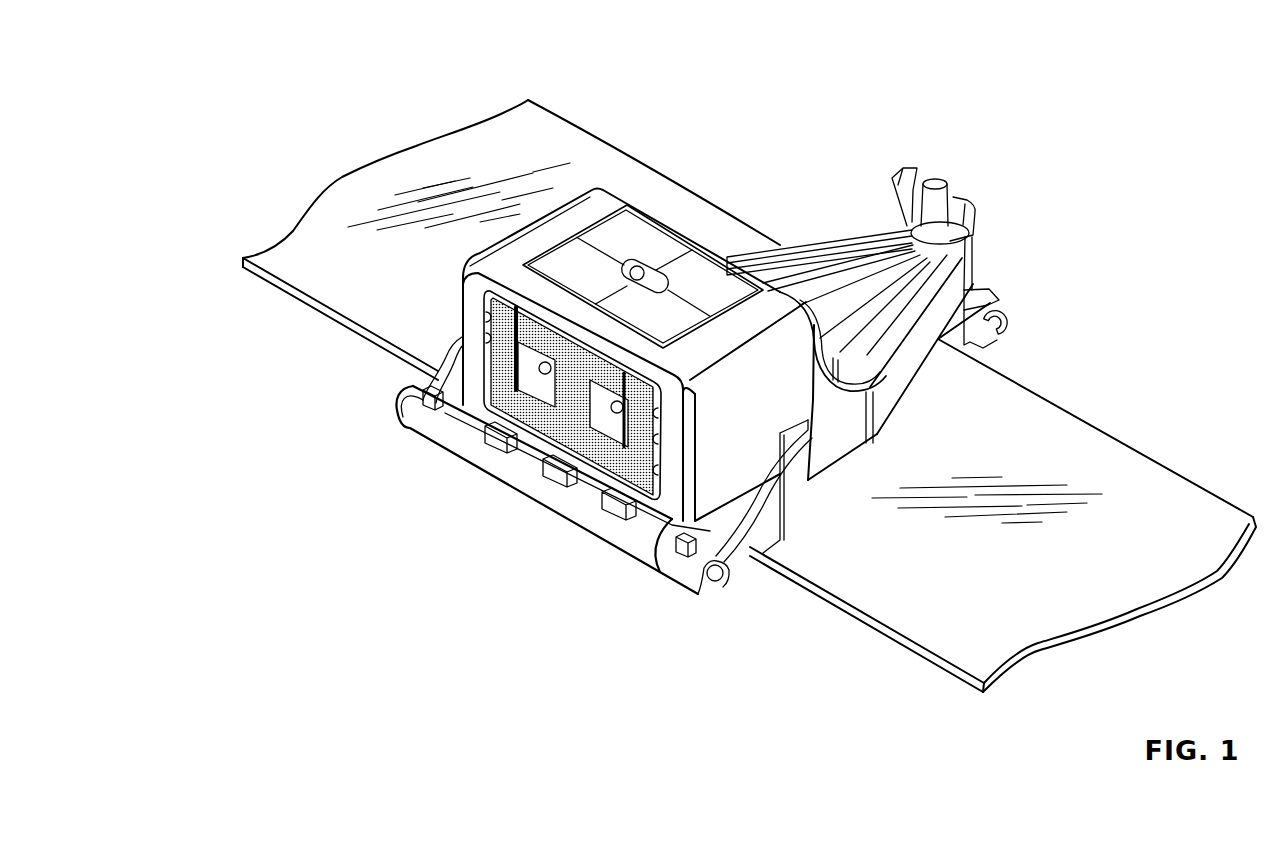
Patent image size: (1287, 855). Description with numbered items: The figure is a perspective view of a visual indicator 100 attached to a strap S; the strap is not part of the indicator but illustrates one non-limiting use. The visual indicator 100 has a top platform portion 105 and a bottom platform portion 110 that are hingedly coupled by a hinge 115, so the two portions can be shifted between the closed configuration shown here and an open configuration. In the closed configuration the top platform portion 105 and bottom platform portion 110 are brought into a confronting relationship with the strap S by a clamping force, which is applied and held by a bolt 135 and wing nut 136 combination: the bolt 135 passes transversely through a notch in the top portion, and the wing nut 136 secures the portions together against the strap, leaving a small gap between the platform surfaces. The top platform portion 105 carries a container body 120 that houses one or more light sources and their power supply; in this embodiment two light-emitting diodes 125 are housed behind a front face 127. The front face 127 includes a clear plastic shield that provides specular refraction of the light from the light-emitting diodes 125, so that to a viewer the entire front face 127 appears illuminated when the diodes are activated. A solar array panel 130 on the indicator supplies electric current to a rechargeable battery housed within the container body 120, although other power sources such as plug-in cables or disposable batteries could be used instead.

The visual indicator 100 is at (310, 92).
The top platform portion 105 is at (818, 243).
The bottom platform portion 110 is at (987, 300).
The hinge 115 is at (732, 605).
The container body 120 is at (445, 298).
The light-emitting diodes 125 is at (547, 373).
The front face 127 is at (500, 367).
The solar array panel 130 is at (627, 229).
The bolt 135 is at (940, 162).
The wing nut 136 is at (982, 192).